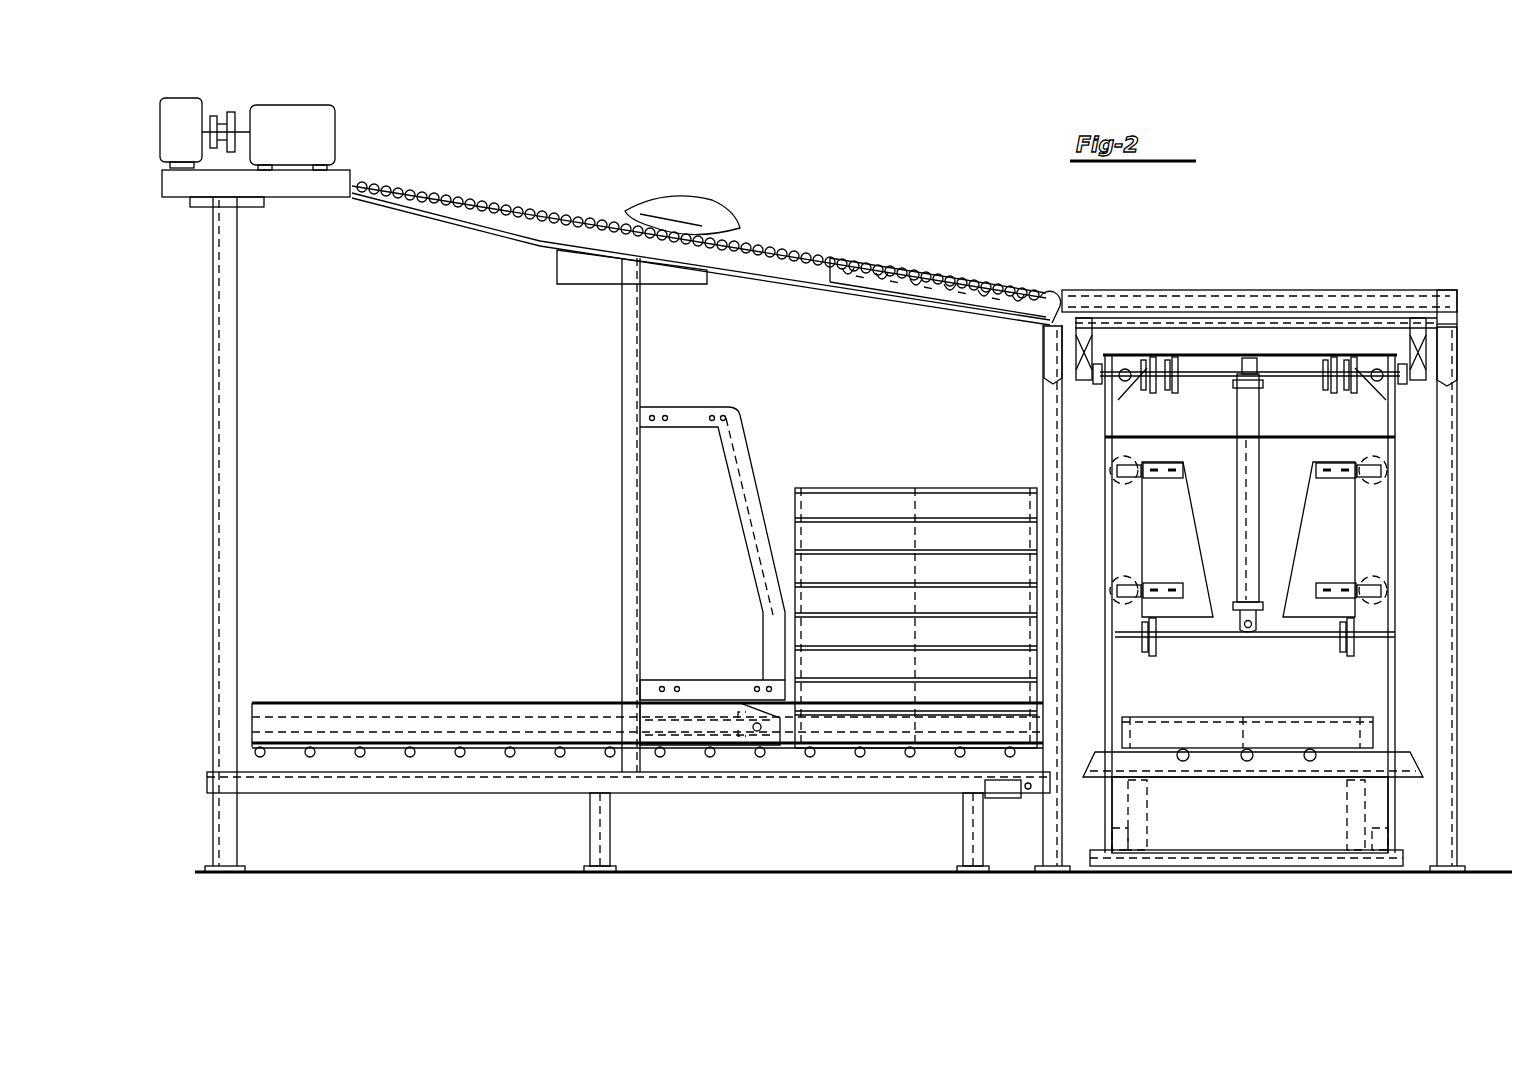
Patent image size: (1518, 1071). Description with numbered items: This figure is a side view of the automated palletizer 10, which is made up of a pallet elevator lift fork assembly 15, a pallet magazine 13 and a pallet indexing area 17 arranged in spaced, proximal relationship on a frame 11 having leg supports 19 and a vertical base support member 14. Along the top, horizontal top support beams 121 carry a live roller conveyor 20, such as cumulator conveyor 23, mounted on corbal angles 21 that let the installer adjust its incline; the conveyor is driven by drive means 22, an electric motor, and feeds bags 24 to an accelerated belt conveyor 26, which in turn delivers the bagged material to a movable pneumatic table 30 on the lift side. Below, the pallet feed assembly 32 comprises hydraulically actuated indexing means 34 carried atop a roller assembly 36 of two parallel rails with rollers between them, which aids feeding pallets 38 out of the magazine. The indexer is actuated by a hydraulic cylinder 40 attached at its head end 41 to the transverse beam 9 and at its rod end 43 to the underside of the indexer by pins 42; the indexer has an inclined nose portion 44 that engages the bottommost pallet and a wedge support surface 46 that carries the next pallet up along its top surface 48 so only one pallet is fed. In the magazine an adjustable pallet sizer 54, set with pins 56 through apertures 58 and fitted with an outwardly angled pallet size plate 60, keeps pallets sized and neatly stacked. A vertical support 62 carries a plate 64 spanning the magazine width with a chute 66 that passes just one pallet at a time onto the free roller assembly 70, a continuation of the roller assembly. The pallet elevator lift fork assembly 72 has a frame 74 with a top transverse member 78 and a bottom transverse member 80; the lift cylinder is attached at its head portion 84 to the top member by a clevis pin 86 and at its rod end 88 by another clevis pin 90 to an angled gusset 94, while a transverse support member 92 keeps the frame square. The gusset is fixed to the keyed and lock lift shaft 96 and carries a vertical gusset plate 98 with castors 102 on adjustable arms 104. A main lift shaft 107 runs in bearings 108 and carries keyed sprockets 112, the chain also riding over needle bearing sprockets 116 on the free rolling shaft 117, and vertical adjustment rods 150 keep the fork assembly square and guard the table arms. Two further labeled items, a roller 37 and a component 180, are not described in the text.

The transverse beam 9 is at (225, 727).
The palletizer 10 is at (760, 212).
The frame 11 is at (203, 345).
The pallet magazine 13 is at (882, 401).
The vertical base support member 14 is at (222, 686).
The pallet elevator lift fork assembly 15 is at (253, 787).
The pallet indexing area 17 is at (404, 481).
The leg supports 19 is at (228, 842).
The live roller conveyor 20 is at (468, 220).
The corbal angles 21 is at (250, 206).
The drive means 22 is at (302, 128).
The cumulator conveyor 23 is at (556, 218).
The bags 24 is at (713, 205).
The accelerated belt conveyor 26 is at (884, 266).
The movable pneumatic table 30 is at (1244, 305).
The pallet feed assembly 32 is at (402, 695).
The hydraulically actuated indexing means 34 is at (277, 712).
The roller assembly 36 is at (377, 760).
The roller 37 is at (460, 755).
The pallets 38 is at (863, 500).
The hydraulic cylinder 40 is at (482, 722).
The head end 41 is at (263, 722).
The pins 42 is at (762, 735).
The rod end 43 is at (730, 733).
The inclined nose portion 44 is at (773, 737).
The wedge support surface 46 is at (768, 718).
The top surface 48 is at (518, 708).
The adjustable pallet sizer 54 is at (687, 491).
The pins 56 is at (672, 408).
The apertures 58 is at (680, 688).
The pallet size plate 60 is at (738, 472).
The vertical support 62 is at (1046, 420).
The plate 64 is at (1041, 382).
The chute 66 is at (1050, 738).
The free roller assembly 70 is at (823, 760).
The pallet elevator lift fork assembly 72 is at (1276, 700).
The pallet elevator lift assembly frame 74 is at (1378, 738).
The top transverse member 78 is at (1252, 358).
The bottom transverse member 80 is at (1247, 847).
The head portion 84 is at (1262, 386).
The clevis pin 86 is at (1237, 382).
The rod end 88 is at (1225, 620).
The clevis pin 90 is at (1265, 625).
The transverse support member 92 is at (1300, 437).
The angled gusset 94 is at (1362, 632).
The keyed and lock lift shaft 96 is at (1357, 673).
The vertical gusset plate 98 is at (1333, 563).
The castors 102 is at (1380, 468).
The adjustable arms 104 is at (1328, 488).
The main lift shaft 107 is at (1372, 370).
The bearings 108 is at (1305, 360).
The keyed sprockets 112 is at (1160, 372).
The needle bearing sprockets 116 is at (1133, 650).
The free rolling shaft 117 is at (1243, 640).
The horizontal top support beams 121 is at (428, 200).
The vertical adjustment rods 150 is at (1452, 300).
The paddle plate 180 is at (1153, 520).